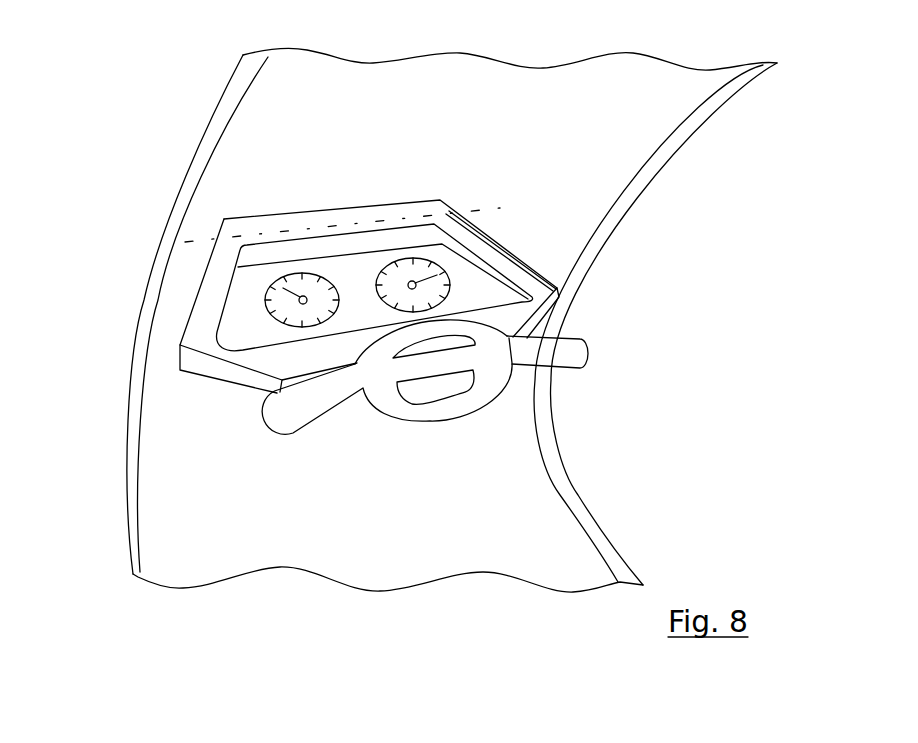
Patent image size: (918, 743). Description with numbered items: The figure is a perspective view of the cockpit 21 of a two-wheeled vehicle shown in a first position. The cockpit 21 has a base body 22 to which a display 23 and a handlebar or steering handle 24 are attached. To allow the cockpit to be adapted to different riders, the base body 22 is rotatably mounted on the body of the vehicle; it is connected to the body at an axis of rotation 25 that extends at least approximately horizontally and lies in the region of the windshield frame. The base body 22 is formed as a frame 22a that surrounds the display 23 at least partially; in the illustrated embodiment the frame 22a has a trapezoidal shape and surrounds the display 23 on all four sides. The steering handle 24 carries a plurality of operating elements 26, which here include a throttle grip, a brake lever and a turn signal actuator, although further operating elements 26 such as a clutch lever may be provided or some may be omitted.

The cockpit 21 is at (173, 282).
The base body 22 is at (431, 198).
The frame 22a is at (503, 262).
The display 23 is at (280, 305).
The steering handle 24 is at (573, 354).
The axis of rotation 25 is at (468, 212).
The operating elements 26 is at (280, 410).